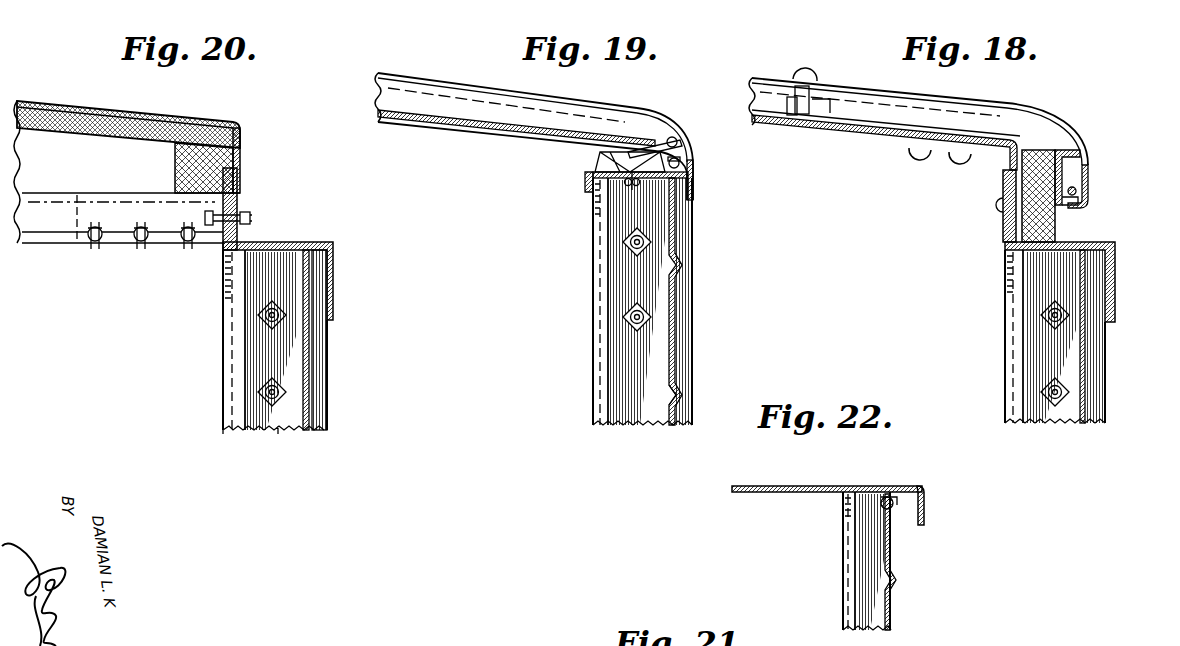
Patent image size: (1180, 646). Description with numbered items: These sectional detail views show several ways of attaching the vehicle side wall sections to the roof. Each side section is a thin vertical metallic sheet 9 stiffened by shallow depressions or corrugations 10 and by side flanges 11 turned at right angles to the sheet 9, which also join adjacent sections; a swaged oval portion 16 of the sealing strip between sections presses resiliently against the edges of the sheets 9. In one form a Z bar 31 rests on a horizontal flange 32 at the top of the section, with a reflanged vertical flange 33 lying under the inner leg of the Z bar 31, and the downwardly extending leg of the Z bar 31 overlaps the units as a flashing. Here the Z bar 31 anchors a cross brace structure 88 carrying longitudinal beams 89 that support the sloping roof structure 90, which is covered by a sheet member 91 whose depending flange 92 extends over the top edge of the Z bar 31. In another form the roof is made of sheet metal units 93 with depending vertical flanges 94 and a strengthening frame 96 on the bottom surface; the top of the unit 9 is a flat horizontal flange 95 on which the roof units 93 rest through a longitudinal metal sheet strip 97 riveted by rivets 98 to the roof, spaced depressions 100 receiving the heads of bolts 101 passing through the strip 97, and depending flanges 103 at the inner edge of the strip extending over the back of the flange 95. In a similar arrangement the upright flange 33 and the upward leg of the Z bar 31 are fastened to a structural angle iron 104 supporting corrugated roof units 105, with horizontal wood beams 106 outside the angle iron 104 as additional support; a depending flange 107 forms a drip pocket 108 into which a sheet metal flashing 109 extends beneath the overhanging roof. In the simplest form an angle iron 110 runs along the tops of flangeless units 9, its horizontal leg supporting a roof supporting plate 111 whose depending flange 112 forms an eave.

In FIG. 20, the thin metallic sheet 9 is at (312, 375).
In FIG. 19, the thin metallic sheet 9 is at (677, 325).
In FIG. 18, the thin metallic sheet 9 is at (1090, 368).
In FIG. 22, the thin metallic sheet 9 is at (894, 560).
In FIG. 19, the depressions or corrugations 10 is at (677, 395).
In FIG. 20, the side flanges 11 is at (253, 367).
In FIG. 19, the side flanges 11 is at (628, 357).
In FIG. 18, the side flanges 11 is at (1033, 363).
In FIG. 22, the side flanges 11 is at (868, 545).
In FIG. 20, the flattened portion of sealing strip 16 is at (327, 400).
In FIG. 19, the flattened portion of sealing strip 16 is at (693, 360).
In FIG. 18, the flattened portion of sealing strip 16 is at (1107, 397).
In FIG. 20, the Z bar 31 is at (293, 240).
In FIG. 18, the Z bar 31 is at (1090, 242).
In FIG. 20, the horizontal flange 32 is at (267, 262).
In FIG. 18, the horizontal flange 32 is at (1040, 253).
In FIG. 20, the vertical flange 33 is at (228, 253).
In FIG. 18, the vertical flange 33 is at (1007, 232).
In FIG. 20, the cross brace structure 88 is at (118, 230).
In FIG. 20, the longitudinal beams 89 is at (243, 141).
In FIG. 20, the sloping roof structure 90 is at (82, 104).
In FIG. 20, the sheet member 91 is at (160, 113).
In FIG. 20, the depending flange 92 is at (243, 152).
In FIG. 19, the sheet metal roof units 93 is at (617, 120).
In FIG. 19, the depending vertical flanges 94 is at (698, 192).
In FIG. 19, the flat horizontal flange 95 is at (626, 184).
In FIG. 19, the frame 96 is at (690, 148).
In FIG. 19, the metal sheet strip 97 is at (603, 158).
In FIG. 19, the rivets 98 is at (676, 155).
In FIG. 19, the depressions 100 is at (628, 150).
In FIG. 19, the bolts 101 is at (638, 186).
In FIG. 19, the depending flanges 103 is at (588, 181).
In FIG. 18, the structural angle iron 104 is at (995, 155).
In FIG. 18, the corrugated metal roof structure units 105 is at (973, 127).
In FIG. 18, the horizontal wood beams 106 is at (1053, 223).
In FIG. 18, the depending flange 107 is at (1089, 167).
In FIG. 18, the drip pocket 108 is at (1085, 190).
In FIG. 18, the flashing 109 is at (1077, 148).
In FIG. 22, the angle iron 110 is at (893, 507).
In FIG. 22, the roof supporting plate 111 is at (782, 486).
In FIG. 22, the depending flange 112 is at (926, 510).